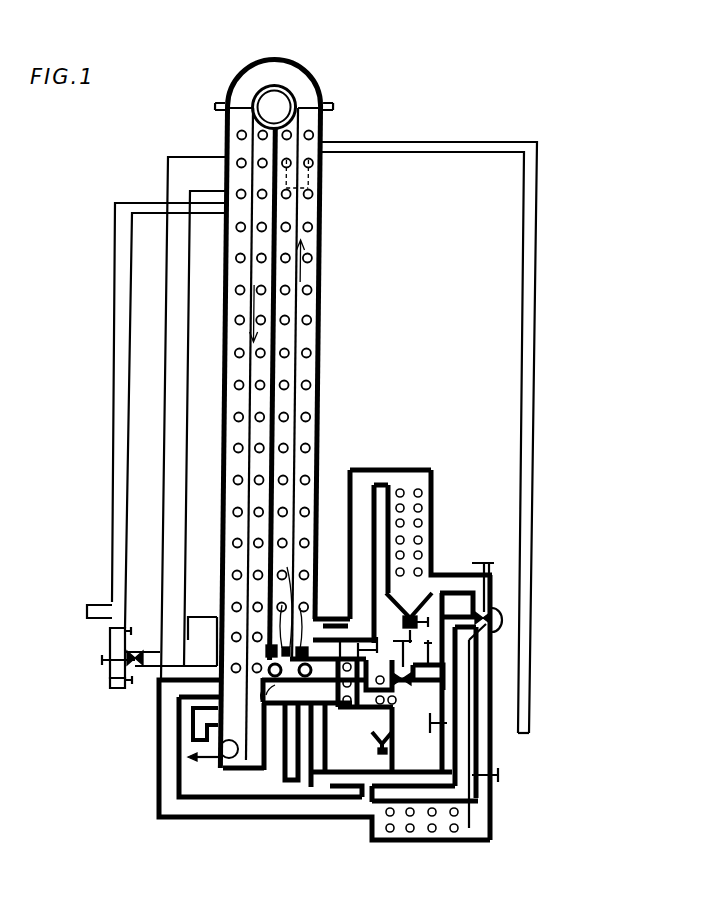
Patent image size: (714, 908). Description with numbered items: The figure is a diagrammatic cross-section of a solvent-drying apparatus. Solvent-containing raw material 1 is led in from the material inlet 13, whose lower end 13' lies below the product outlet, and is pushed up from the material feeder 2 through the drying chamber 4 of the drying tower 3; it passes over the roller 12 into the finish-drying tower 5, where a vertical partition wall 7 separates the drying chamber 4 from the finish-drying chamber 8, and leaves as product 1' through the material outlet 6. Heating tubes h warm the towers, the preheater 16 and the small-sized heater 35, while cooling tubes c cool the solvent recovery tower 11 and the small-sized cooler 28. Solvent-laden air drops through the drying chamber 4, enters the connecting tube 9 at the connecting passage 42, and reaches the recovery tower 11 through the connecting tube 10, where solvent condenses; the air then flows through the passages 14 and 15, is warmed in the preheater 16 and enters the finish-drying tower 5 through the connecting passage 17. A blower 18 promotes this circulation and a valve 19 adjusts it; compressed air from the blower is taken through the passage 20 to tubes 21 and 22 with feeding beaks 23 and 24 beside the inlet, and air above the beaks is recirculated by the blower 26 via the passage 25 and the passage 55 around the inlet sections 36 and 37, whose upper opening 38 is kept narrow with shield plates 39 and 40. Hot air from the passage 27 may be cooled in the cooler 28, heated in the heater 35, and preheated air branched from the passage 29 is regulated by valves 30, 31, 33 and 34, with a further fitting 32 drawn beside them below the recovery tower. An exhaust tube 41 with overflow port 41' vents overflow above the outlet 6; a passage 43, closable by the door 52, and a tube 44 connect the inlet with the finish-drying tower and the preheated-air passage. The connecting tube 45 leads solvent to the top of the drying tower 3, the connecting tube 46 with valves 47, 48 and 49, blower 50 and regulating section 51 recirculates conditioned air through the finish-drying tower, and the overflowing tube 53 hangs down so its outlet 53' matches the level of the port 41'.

The raw material 1 is at (270, 748).
The product 1' is at (203, 777).
The material feeder 2 is at (278, 707).
The drying tower 3 is at (323, 333).
The drying chamber 4 is at (307, 403).
The finish-drying tower 5 is at (223, 337).
The material outlet 6 is at (221, 748).
The vertical partition wall 7 is at (272, 282).
The finish-drying chamber 8 is at (229, 373).
The connecting tube 9 is at (337, 617).
The connecting tube 10 is at (348, 520).
The solvent recovery tower 11 is at (432, 480).
The roller 12 is at (276, 86).
The material inlet 13 is at (281, 741).
The lower end 13' is at (284, 823).
The passage 14 is at (455, 572).
The passage 15 is at (488, 676).
The preheater 16 is at (448, 842).
The connecting passage 17 is at (253, 818).
The blower 18 is at (488, 630).
The valve 19 is at (480, 780).
The passage 20 is at (456, 683).
The tube 21 is at (265, 677).
The tube 22 is at (353, 733).
The feeding beak 23 is at (288, 659).
The feeding beak 24 is at (311, 659).
The passage 25 is at (360, 662).
The blower 26 is at (398, 688).
The passage 27 is at (371, 623).
The small-sized cooler 28 is at (390, 736).
The passage 29 is at (457, 693).
The valve 30 is at (427, 733).
The valve 31 is at (420, 616).
The fitting 32 is at (426, 645).
The valve 33 is at (396, 643).
The valve 34 is at (333, 637).
The small-sized heater 35 is at (352, 722).
The introducing inlet section 36 is at (283, 635).
The introducing inlet section 37 is at (306, 635).
The opening 38 is at (283, 597).
The shield plate 39 is at (279, 614).
The shield plate 40 is at (303, 617).
The exhaust tube 41 is at (168, 724).
The overflow port 41' is at (162, 751).
The connecting passage 42 is at (322, 607).
The passage 43 is at (275, 695).
The tube 44 is at (308, 768).
The connecting tube 45 is at (165, 466).
The connecting tube 46 is at (113, 383).
The valve 47 is at (96, 596).
The valve 48 is at (122, 628).
The valve 49 is at (110, 688).
The blower 50 is at (140, 655).
The regulating section 51 is at (199, 626).
The door 52 is at (238, 745).
The overflowing tube 53 is at (450, 437).
The overflowing outlet 53' is at (539, 754).
The passage 55 is at (266, 651).
The heating tubes h is at (314, 259).
The cooling tubes c is at (420, 507).